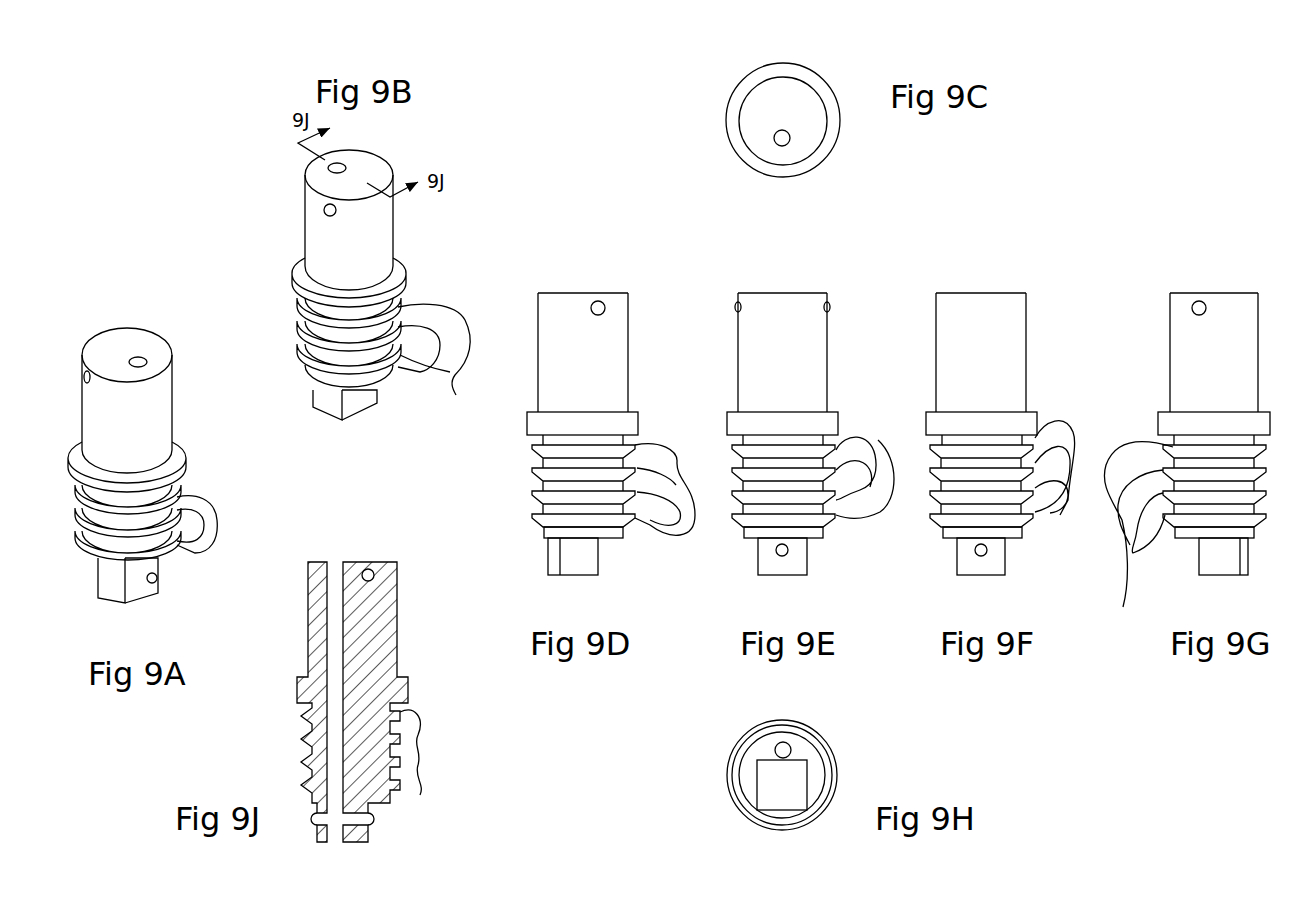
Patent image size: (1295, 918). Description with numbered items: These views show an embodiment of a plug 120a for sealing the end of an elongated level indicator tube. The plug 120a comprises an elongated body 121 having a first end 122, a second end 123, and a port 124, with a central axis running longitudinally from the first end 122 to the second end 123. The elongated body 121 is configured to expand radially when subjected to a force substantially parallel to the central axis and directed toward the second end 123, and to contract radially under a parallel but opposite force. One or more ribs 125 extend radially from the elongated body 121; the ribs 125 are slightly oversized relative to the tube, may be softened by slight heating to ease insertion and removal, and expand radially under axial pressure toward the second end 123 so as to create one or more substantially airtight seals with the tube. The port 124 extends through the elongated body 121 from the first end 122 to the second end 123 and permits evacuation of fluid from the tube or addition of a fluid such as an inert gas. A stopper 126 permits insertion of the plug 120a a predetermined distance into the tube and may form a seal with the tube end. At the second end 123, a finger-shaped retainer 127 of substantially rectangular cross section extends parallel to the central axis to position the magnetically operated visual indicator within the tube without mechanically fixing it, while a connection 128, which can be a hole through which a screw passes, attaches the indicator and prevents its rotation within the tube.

In FIG. 9A, the plug 120a is at (149, 312).
In FIG. 9B, the plug 120a is at (396, 405).
In FIG. 9C, the plug 120a is at (712, 95).
In FIG. 9D, the plug 120a is at (595, 272).
In FIG. 9E, the plug 120a is at (753, 272).
In FIG. 9F, the plug 120a is at (981, 270).
In FIG. 9G, the plug 120a is at (1238, 270).
In FIG. 9J, the plug 120a is at (415, 598).
In FIG. 9H, the plug 120a is at (720, 745).
In FIG. 9A, the elongated body 121 is at (137, 432).
In FIG. 9B, the elongated body 121 is at (310, 205).
In FIG. 9D, the elongated body 121 is at (548, 327).
In FIG. 9E, the elongated body 121 is at (745, 340).
In FIG. 9F, the elongated body 121 is at (963, 300).
In FIG. 9G, the elongated body 121 is at (1180, 340).
In FIG. 9J, the elongated body 121 is at (352, 702).
In FIG. 9A, the first end 122 is at (118, 340).
In FIG. 9B, the first end 122 is at (390, 175).
In FIG. 9C, the first end 122 is at (790, 88).
In FIG. 9D, the first end 122 is at (575, 292).
In FIG. 9E, the first end 122 is at (785, 294).
In FIG. 9F, the first end 122 is at (997, 300).
In FIG. 9G, the first end 122 is at (1205, 300).
In FIG. 9A, the second end 123 is at (140, 602).
In FIG. 9B, the second end 123 is at (365, 407).
In FIG. 9D, the second end 123 is at (580, 563).
In FIG. 9E, the second end 123 is at (787, 577).
In FIG. 9F, the second end 123 is at (987, 577).
In FIG. 9G, the second end 123 is at (1213, 572).
In FIG. 9H, the second end 123 is at (773, 802).
In FIG. 9A, the port 124 is at (140, 360).
In FIG. 9B, the port 124 is at (330, 168).
In FIG. 9C, the port 124 is at (783, 137).
In FIG. 9J, the port 124 is at (334, 572).
In FIG. 9H, the port 124 is at (785, 750).
In FIG. 9A, the ribs 125 is at (177, 537).
In FIG. 9B, the ribs 125 is at (447, 361).
In FIG. 9D, the ribs 125 is at (693, 500).
In FIG. 9E, the ribs 125 is at (874, 443).
In FIG. 9F, the ribs 125 is at (1067, 503).
In FIG. 9G, the ribs 125 is at (1133, 539).
In FIG. 9J, the ribs 125 is at (422, 785).
In FIG. 9A, the stopper 126 is at (173, 477).
In FIG. 9B, the stopper 126 is at (398, 293).
In FIG. 9D, the stopper 126 is at (623, 423).
In FIG. 9E, the stopper 126 is at (810, 417).
In FIG. 9F, the stopper 126 is at (998, 425).
In FIG. 9G, the stopper 126 is at (1168, 417).
In FIG. 9J, the stopper 126 is at (408, 692).
In FIG. 9A, the finger-shaped retainer 127 is at (113, 593).
In FIG. 9B, the finger-shaped retainer 127 is at (327, 403).
In FIG. 9D, the finger-shaped retainer 127 is at (567, 550).
In FIG. 9E, the finger-shaped retainer 127 is at (767, 568).
In FIG. 9F, the finger-shaped retainer 127 is at (965, 568).
In FIG. 9G, the finger-shaped retainer 127 is at (1207, 550).
In FIG. 9A, the connection 128 is at (157, 578).
In FIG. 9E, the connection 128 is at (788, 550).
In FIG. 9F, the connection 128 is at (987, 550).
In FIG. 9J, the connection 128 is at (367, 818).